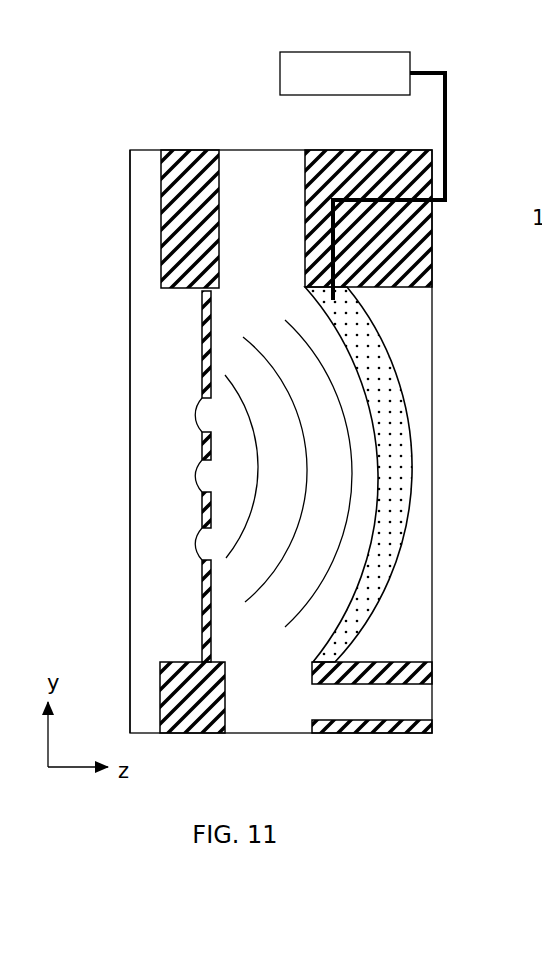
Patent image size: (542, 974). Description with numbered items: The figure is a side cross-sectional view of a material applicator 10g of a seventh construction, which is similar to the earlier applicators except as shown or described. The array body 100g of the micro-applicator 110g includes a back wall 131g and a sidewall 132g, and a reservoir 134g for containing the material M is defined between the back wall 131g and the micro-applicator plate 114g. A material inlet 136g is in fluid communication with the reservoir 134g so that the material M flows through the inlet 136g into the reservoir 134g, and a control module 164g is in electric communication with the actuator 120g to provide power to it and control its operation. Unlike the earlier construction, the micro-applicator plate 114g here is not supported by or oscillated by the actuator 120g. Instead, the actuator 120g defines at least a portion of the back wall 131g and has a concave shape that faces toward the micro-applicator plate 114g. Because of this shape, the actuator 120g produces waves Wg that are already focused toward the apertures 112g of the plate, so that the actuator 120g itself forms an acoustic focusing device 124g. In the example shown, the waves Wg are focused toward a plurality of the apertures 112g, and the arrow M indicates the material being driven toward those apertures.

The material applicator 10g is at (140, 160).
The array body 100g is at (210, 149).
The micro-applicator 110g is at (155, 666).
The apertures 112g is at (202, 398).
The micro-applicator plate 114g is at (196, 348).
The actuator 120g is at (400, 447).
The acoustic focusing device 124g is at (380, 507).
The back wall 131g is at (353, 602).
The sidewall 132g is at (195, 288).
The reservoir 134g is at (227, 347).
The material inlet 136g is at (396, 700).
The control module 164g is at (280, 71).
The waves Wg is at (333, 557).
The material M is at (293, 702).